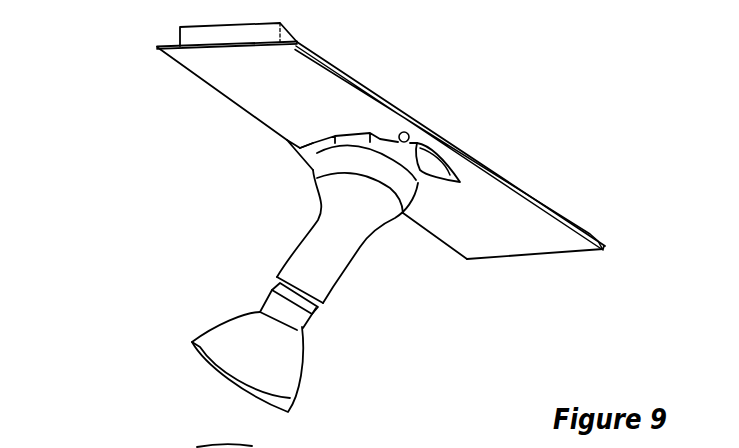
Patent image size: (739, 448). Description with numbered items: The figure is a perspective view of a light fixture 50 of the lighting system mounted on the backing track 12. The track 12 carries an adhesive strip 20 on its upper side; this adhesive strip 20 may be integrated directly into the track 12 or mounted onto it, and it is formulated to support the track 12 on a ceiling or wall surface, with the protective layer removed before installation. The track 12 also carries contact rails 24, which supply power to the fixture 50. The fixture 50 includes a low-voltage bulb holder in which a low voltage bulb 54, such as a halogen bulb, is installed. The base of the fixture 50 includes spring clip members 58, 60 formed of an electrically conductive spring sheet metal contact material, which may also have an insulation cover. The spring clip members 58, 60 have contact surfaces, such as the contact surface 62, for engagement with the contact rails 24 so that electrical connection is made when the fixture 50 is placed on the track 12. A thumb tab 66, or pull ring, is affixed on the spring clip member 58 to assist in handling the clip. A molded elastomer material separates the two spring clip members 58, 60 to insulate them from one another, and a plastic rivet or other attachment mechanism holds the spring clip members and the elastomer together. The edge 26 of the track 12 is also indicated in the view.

The track 12 is at (335, 177).
The adhesive strip 20 is at (440, 118).
The contact rails 24 is at (513, 180).
The plate top edge 26 is at (157, 47).
The fixture 50 is at (271, 206).
The low voltage bulb 54 is at (312, 325).
The spring clip member 58 is at (420, 178).
The spring clip member 60 is at (293, 162).
The contact surface 62 is at (403, 117).
The thumb tab 66 is at (452, 193).